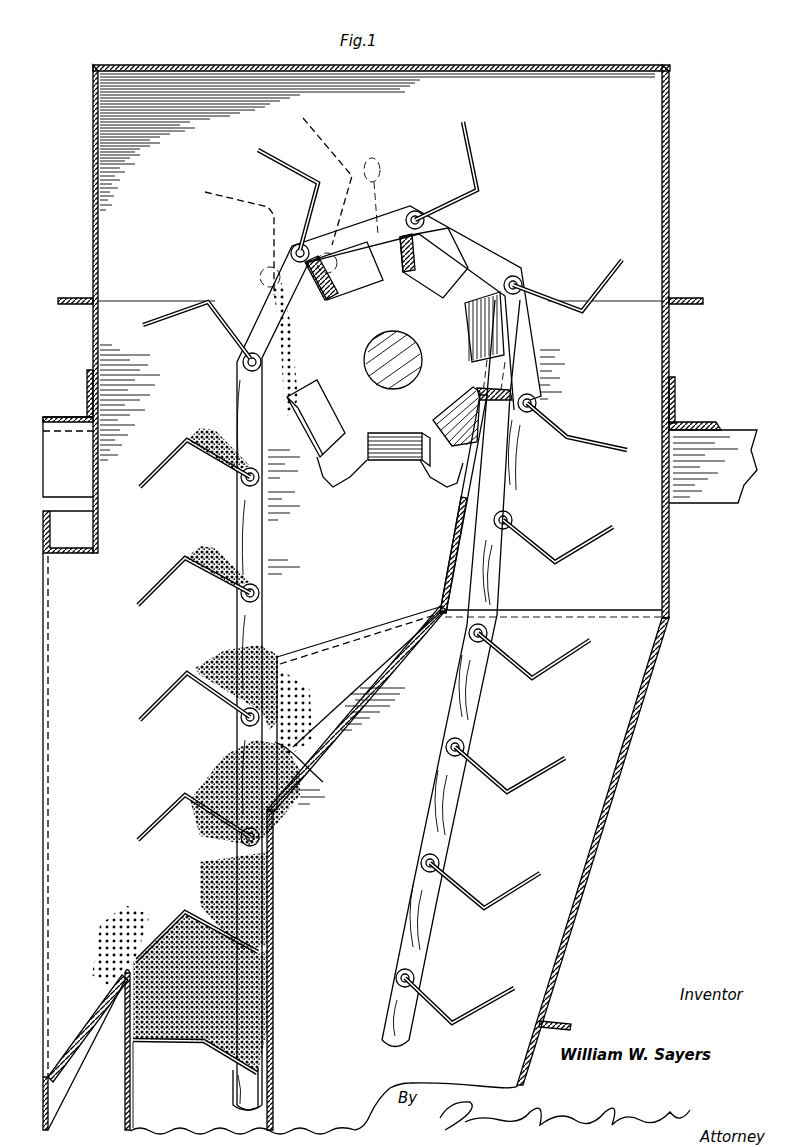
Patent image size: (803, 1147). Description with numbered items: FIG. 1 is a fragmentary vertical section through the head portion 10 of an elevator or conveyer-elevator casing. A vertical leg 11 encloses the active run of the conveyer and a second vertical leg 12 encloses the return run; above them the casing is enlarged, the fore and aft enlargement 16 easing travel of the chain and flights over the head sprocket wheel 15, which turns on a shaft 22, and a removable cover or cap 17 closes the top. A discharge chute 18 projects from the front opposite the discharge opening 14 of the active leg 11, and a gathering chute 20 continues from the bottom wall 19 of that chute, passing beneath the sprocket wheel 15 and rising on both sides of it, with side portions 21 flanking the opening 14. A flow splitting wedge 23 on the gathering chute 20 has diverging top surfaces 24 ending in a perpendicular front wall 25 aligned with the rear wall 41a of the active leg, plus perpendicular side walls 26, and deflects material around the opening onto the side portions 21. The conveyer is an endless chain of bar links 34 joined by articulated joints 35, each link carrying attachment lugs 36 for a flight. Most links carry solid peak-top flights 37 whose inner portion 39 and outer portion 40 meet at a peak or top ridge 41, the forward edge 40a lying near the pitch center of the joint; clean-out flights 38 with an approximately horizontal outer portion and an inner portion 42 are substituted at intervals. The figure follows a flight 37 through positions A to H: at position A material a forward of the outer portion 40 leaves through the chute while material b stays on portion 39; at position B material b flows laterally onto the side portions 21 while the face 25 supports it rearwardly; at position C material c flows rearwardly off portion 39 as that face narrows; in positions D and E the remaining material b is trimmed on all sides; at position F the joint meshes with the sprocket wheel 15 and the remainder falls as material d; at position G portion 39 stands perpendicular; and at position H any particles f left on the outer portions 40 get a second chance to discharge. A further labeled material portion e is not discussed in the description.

The head portion of conveyer-elevator casing 10 is at (620, 812).
The vertical leg portion 11 is at (125, 1100).
The vertical leg for return run 12 is at (532, 1050).
The discharge or outlet opening 14 is at (118, 992).
The head sprocket wheel 15 is at (395, 357).
The fore and aft enlargement of head casing section 16 is at (93, 360).
The cover or cap 17 is at (670, 186).
The discharge chute 18 is at (38, 887).
The bottom wall of discharge chute 19 is at (62, 1040).
The gathering chute 20 is at (446, 546).
The side portions of gathering chute 21 is at (338, 730).
The shaft 22 is at (410, 352).
The flow splitting wedge 23 is at (331, 638).
The diverging top surfaces 24 is at (360, 676).
The perpendicular wall portion 25 is at (308, 771).
The perpendicular side walls 26 is at (352, 738).
The chain links 34 is at (262, 536).
The articulated joints 35 is at (262, 590).
The attachment lugs 36 is at (445, 200).
The flights 37 is at (237, 196).
The clean-out flights 38 is at (597, 452).
The inner flight portion 39 is at (560, 318).
The outer flight portion 40 is at (616, 282).
The front edge of flight 40a is at (625, 262).
The peak or top ridge 41 is at (592, 442).
The rear wall of active vertical leg 41a is at (273, 906).
The inner portion of clean-out flight 42 is at (562, 440).
The flight position A is at (102, 930).
The flight position B is at (132, 839).
The flight position C is at (155, 695).
The flight position D is at (138, 601).
The flight position E is at (136, 487).
The flight position F is at (138, 328).
The flight position G is at (204, 192).
The flight position H is at (297, 120).
The discharged material a is at (123, 920).
The retained material b is at (195, 440).
The rearwardly flowing material c is at (298, 705).
The material discharged at position F d is at (284, 425).
The material on star wheel e is at (312, 310).
The residual material particles f is at (382, 175).